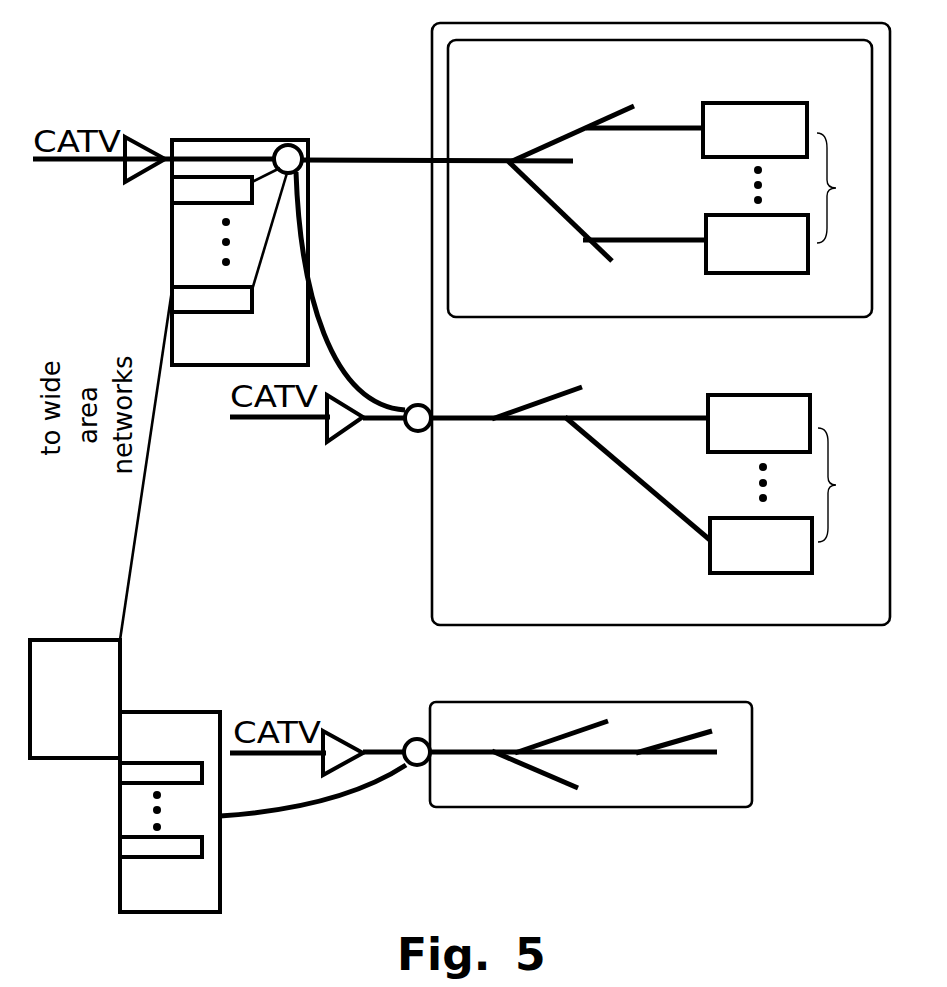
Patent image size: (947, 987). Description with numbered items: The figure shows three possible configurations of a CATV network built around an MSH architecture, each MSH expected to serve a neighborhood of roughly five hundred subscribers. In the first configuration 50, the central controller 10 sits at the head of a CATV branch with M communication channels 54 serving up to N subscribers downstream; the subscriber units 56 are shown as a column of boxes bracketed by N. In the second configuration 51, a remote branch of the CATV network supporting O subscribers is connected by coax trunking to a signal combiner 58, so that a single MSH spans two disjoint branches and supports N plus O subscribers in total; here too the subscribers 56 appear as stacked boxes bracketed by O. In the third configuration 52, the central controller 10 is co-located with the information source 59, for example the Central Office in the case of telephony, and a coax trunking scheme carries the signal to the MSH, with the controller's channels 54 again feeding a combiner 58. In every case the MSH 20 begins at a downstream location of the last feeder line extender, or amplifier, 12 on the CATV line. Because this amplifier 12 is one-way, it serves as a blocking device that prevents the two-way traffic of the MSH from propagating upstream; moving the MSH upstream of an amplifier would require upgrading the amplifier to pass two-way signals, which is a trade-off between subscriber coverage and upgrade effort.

The central controller 10 is at (206, 139).
The feeder line extender (amplifier) 12 is at (325, 446).
The MSH 20 is at (500, 318).
The first configuration 50 is at (835, 318).
The second configuration 51 is at (830, 627).
The third configuration 52 is at (718, 808).
The communication channels 54 is at (203, 207).
The subscriber terminal unit 56 is at (733, 103).
The signal combiner 58 is at (415, 432).
The information source 59 is at (58, 638).